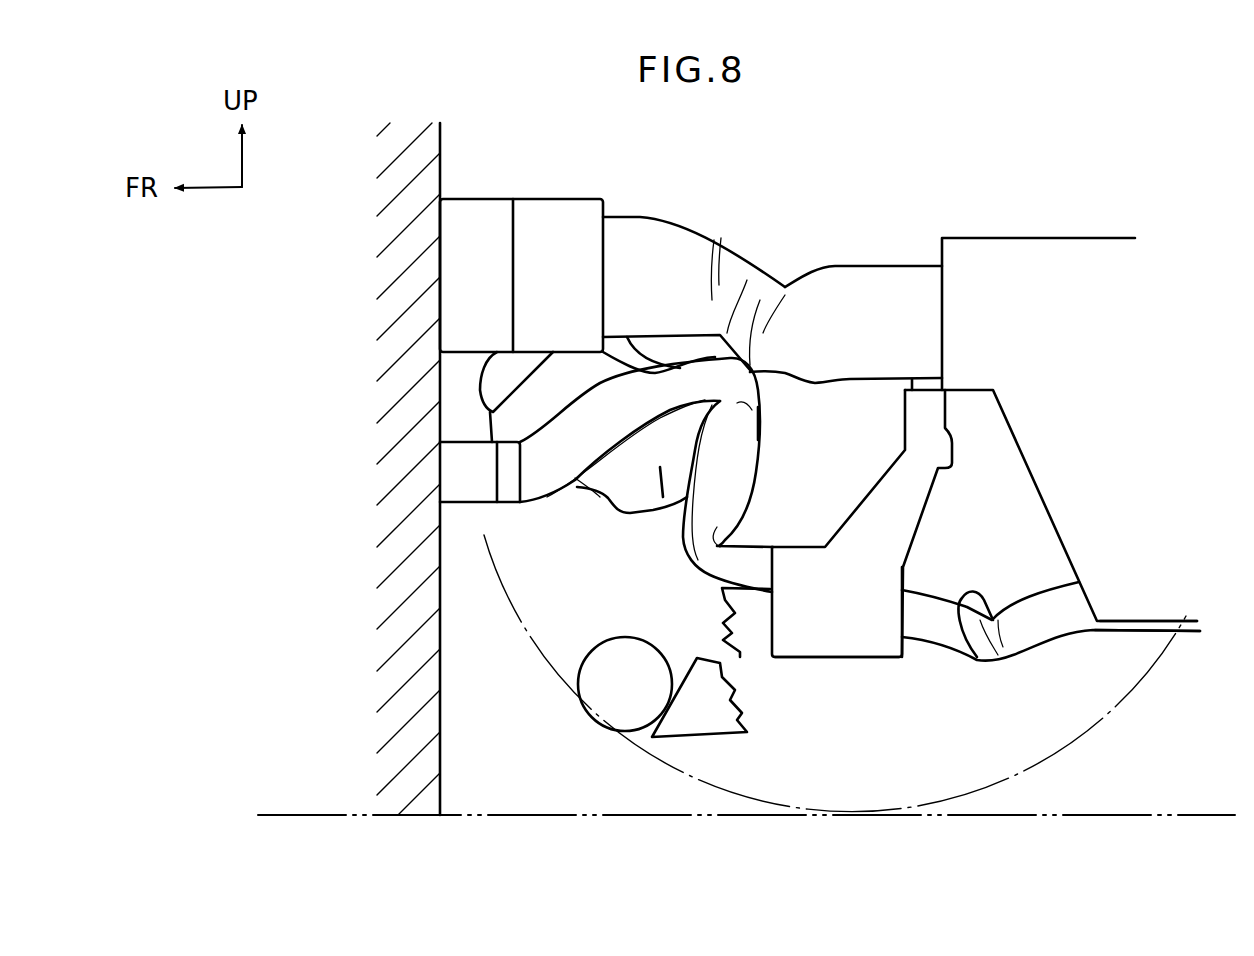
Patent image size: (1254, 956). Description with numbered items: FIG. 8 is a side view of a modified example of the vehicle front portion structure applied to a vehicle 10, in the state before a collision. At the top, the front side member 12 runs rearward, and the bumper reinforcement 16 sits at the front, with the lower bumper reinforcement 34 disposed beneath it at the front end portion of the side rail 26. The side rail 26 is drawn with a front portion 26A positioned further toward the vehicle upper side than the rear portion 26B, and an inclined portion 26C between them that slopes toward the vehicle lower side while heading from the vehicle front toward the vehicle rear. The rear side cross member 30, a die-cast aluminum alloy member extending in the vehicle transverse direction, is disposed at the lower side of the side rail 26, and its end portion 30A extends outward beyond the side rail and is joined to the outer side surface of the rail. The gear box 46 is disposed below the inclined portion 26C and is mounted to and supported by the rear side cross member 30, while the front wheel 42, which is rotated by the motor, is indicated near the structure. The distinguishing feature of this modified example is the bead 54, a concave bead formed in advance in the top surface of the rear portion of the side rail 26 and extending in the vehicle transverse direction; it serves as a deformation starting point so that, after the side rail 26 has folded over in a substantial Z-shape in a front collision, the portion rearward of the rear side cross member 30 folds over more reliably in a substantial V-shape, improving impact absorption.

The vehicle 10 is at (529, 148).
The front side member 12 is at (888, 258).
The bumper reinforcement 16 is at (467, 199).
The side rail 26 is at (695, 352).
The front portion of side rail 26A is at (608, 503).
The rear portion of side rail 26B is at (1137, 633).
The inclined portion of side rail 26C is at (758, 448).
The rear side cross member 30 is at (828, 668).
The end portion of rear side cross member 30A is at (853, 658).
The lower bumper reinforcement 34 is at (455, 503).
The front wheel 42 is at (1090, 733).
The gear box 46 is at (612, 733).
The bead 54 is at (973, 650).